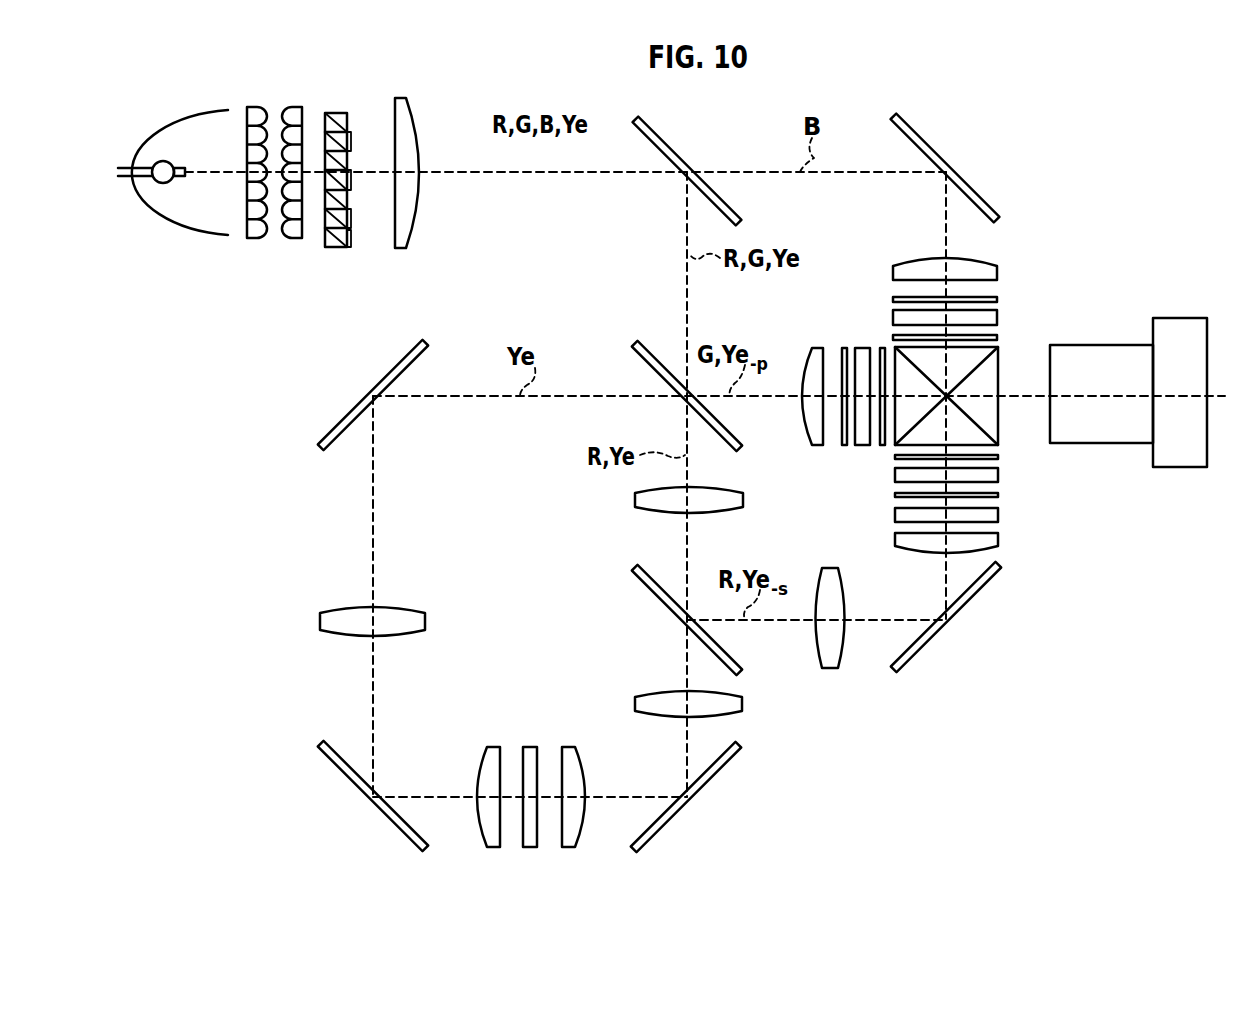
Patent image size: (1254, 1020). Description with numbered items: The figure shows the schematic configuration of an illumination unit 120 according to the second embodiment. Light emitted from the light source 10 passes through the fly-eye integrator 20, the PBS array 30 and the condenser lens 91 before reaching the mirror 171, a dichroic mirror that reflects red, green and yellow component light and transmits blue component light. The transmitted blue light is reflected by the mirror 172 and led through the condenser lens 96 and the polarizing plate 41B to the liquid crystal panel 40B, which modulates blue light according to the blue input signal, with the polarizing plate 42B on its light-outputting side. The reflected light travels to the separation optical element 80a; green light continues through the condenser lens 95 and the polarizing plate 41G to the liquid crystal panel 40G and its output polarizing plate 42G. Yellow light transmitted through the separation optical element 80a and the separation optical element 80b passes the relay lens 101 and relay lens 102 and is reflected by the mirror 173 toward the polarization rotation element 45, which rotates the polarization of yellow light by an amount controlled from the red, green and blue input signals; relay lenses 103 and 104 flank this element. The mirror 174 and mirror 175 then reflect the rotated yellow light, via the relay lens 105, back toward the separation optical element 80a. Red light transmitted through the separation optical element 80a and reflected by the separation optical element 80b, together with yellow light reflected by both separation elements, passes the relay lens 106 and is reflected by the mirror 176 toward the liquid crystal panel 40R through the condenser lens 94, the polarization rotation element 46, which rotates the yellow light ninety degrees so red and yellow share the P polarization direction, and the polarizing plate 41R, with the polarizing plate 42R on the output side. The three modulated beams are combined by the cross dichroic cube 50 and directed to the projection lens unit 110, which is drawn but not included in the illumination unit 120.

The light source 10 is at (200, 110).
The fly-eye integrator 20 is at (302, 97).
The PBS array 30 is at (335, 113).
The lens 91 is at (402, 100).
The mirror 171 is at (650, 125).
The mirror 172 is at (905, 122).
The mirror 173 is at (715, 770).
The mirror 174 is at (333, 756).
The mirror 175 is at (405, 362).
The mirror 176 is at (972, 595).
The separation optical element 80a is at (650, 347).
The separation optical element 80b is at (655, 590).
The lens 95 is at (808, 360).
The lens 96 is at (1000, 262).
The lens 94 is at (920, 546).
The liquid crystal panel 40G is at (863, 352).
The liquid crystal panel 40B is at (997, 317).
The liquid crystal panel 40R is at (1000, 475).
The polarizing plate 41G is at (843, 352).
The polarizing plate 41B is at (997, 298).
The polarizing plate 41R is at (1000, 495).
The polarizing plate 42G is at (882, 350).
The polarizing plate 42B is at (997, 337).
The polarizing plate 42R is at (1000, 455).
The polarization rotation element 45 is at (530, 747).
The polarization rotation element 46 is at (1000, 520).
The cross dichroic cube 50 is at (1002, 350).
The projection lens unit 110 is at (1178, 330).
The lens 101 is at (735, 497).
The lens 102 is at (735, 704).
The lens 103 is at (575, 747).
The lens 104 is at (490, 747).
The lens 105 is at (418, 620).
The lens 106 is at (832, 663).
The illumination unit 120 is at (1191, 637).